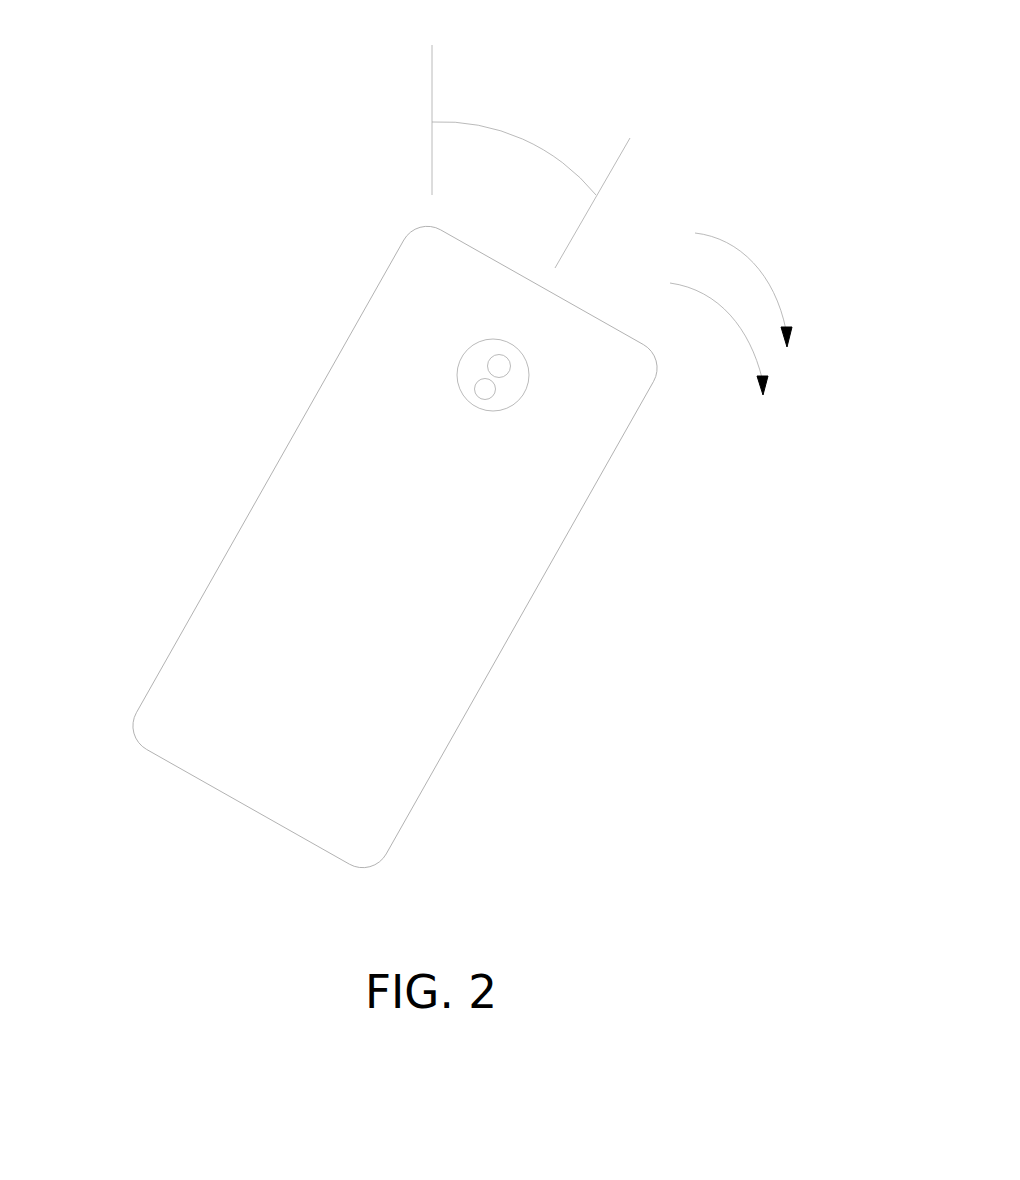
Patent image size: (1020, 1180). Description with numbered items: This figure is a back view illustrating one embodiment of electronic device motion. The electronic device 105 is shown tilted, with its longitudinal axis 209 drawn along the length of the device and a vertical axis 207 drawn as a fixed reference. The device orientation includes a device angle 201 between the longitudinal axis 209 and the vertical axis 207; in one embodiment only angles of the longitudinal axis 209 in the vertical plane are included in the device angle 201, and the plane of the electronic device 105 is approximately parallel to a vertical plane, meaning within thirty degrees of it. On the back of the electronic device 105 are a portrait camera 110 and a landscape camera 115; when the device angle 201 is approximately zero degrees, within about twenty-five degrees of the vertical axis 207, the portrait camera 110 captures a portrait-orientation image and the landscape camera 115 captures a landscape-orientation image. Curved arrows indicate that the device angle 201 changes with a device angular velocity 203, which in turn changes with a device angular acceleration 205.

The electronic device 105 is at (132, 722).
The portrait camera 110 is at (509, 371).
The landscape camera 115 is at (490, 396).
The device angle 201 is at (533, 145).
The device angular velocity 203 is at (768, 272).
The device angular acceleration 205 is at (737, 317).
The vertical axis 207 is at (432, 174).
The longitudinal axis 209 is at (612, 177).